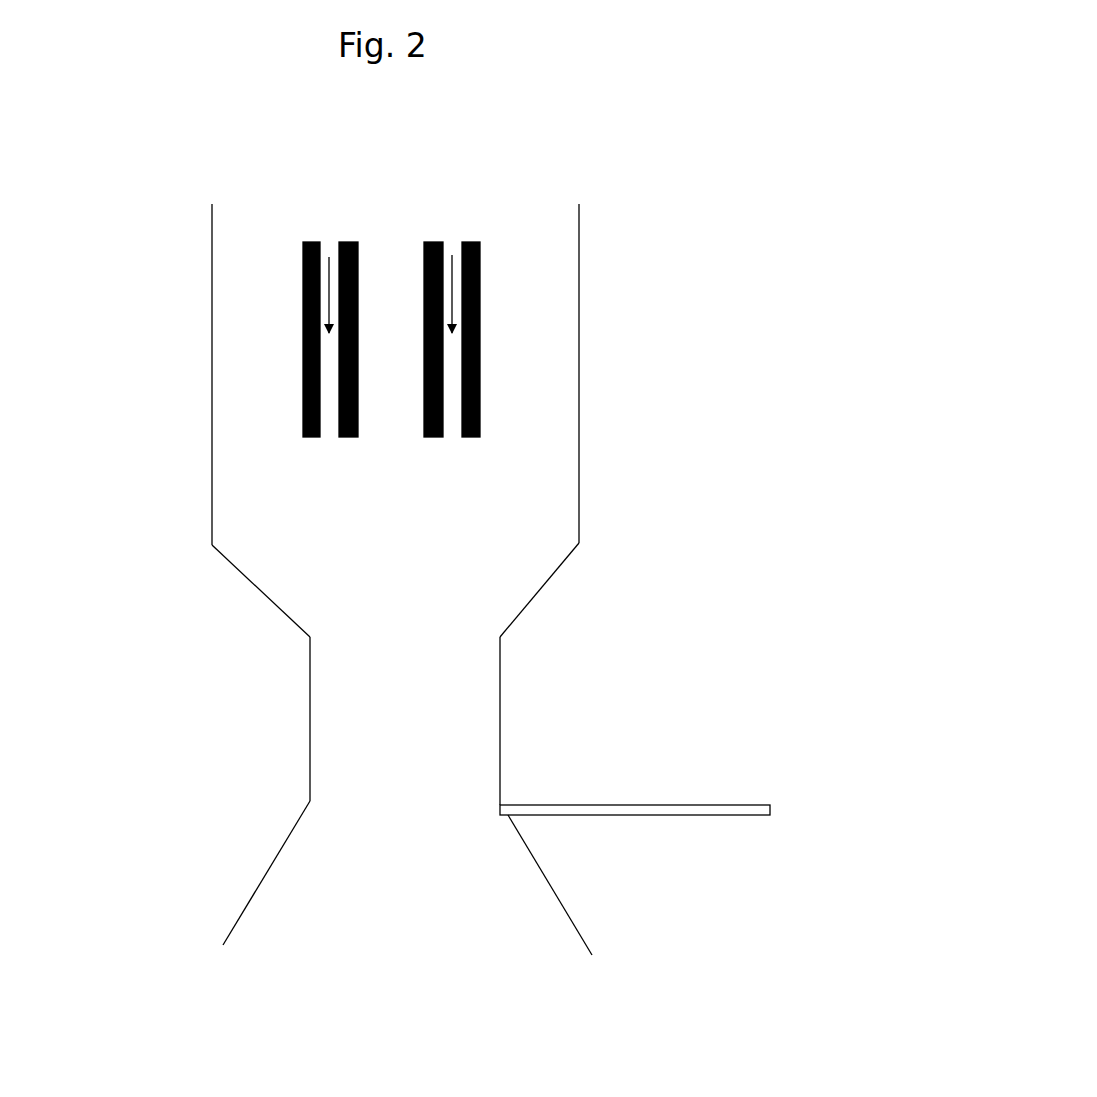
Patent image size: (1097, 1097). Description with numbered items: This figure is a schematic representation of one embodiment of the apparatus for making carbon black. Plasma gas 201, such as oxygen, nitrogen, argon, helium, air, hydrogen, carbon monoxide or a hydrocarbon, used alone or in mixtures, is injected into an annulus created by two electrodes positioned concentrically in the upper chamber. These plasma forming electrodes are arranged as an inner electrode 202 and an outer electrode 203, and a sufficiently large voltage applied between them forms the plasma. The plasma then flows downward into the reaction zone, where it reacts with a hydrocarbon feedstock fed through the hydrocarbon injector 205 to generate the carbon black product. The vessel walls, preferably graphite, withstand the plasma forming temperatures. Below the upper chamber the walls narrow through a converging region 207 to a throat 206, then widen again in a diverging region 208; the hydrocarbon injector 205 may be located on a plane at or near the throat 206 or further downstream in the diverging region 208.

The plasma gas 201 is at (449, 230).
The inner electrode 202 is at (353, 441).
The outer electrode 203 is at (296, 278).
The hydrocarbon injector 205 is at (635, 773).
The throat 206 is at (306, 720).
The converging region 207 is at (261, 602).
The diverging region 208 is at (256, 873).